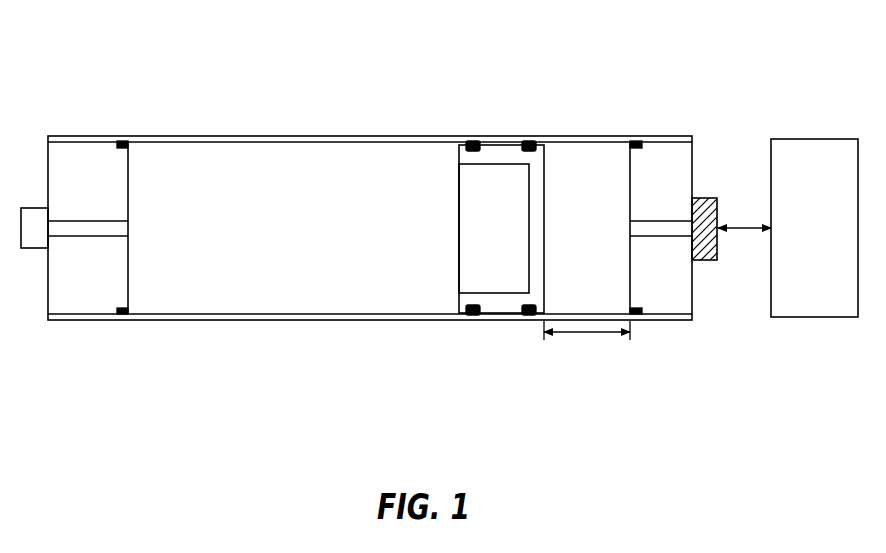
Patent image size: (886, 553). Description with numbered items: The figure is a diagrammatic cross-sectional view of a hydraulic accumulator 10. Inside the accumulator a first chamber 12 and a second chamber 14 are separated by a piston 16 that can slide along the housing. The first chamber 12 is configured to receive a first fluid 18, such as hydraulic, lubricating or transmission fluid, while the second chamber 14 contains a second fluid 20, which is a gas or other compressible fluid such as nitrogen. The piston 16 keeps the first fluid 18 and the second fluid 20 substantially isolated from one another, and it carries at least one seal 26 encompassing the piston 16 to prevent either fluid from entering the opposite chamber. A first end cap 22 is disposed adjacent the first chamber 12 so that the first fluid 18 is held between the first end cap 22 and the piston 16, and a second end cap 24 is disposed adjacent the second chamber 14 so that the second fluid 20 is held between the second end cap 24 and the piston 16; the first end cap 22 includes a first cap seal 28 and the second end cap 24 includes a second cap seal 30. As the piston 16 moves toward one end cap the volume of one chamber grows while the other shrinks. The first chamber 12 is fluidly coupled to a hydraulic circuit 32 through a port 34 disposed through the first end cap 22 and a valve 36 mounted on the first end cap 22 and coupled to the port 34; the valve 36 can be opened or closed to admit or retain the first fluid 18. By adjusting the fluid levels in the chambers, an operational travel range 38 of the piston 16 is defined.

The hydraulic accumulator 10 is at (110, 60).
The first chamber 12 is at (583, 150).
The second chamber 14 is at (307, 152).
The piston 16 is at (496, 152).
The first fluid 18 is at (597, 238).
The second fluid 20 is at (304, 240).
The first end cap 22 is at (660, 148).
The second end cap 24 is at (87, 152).
The seal 26 is at (529, 315).
The first cap seal 28 is at (633, 318).
The second cap seal 30 is at (121, 316).
The hydraulic circuit 32 is at (815, 139).
The port 34 is at (670, 228).
The valve 36 is at (706, 198).
The operational travel range 38 is at (583, 333).